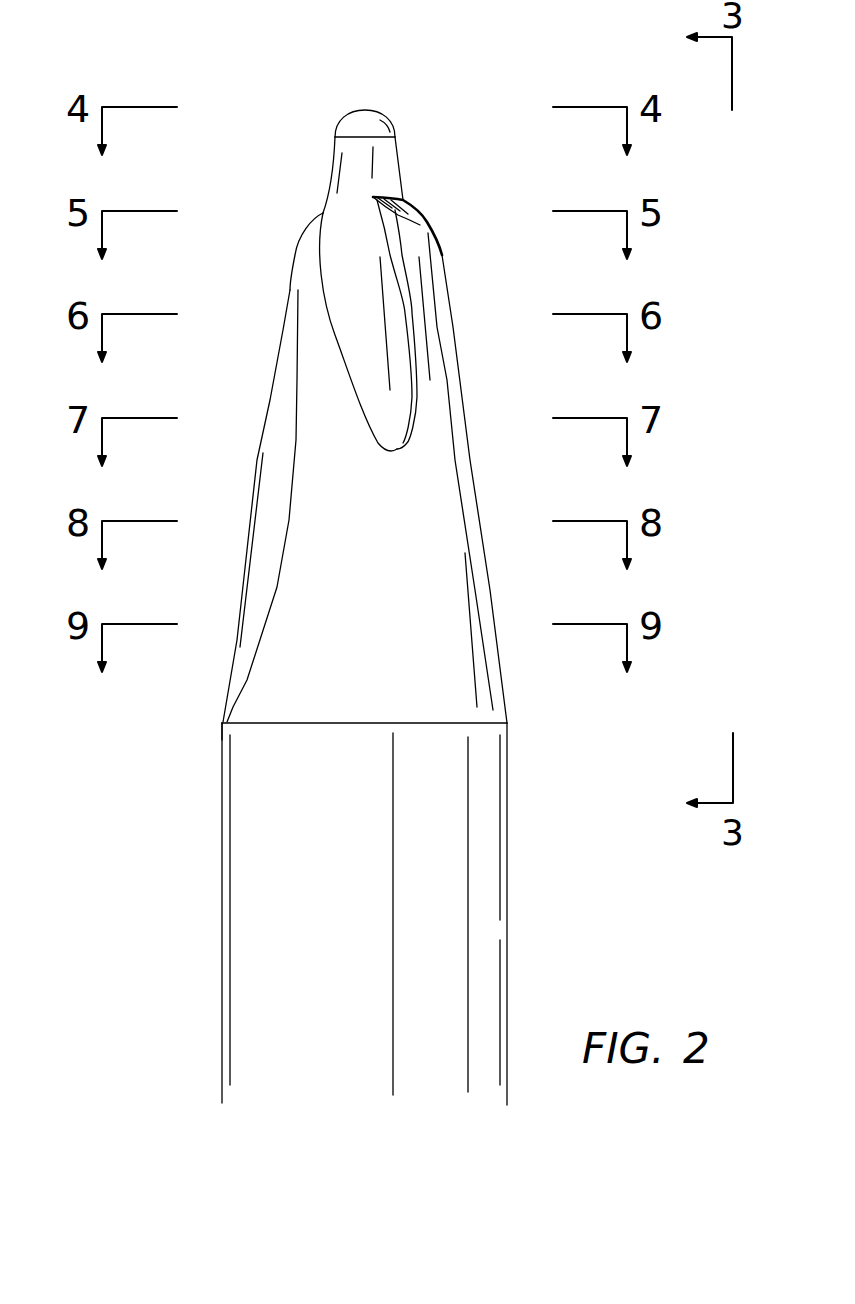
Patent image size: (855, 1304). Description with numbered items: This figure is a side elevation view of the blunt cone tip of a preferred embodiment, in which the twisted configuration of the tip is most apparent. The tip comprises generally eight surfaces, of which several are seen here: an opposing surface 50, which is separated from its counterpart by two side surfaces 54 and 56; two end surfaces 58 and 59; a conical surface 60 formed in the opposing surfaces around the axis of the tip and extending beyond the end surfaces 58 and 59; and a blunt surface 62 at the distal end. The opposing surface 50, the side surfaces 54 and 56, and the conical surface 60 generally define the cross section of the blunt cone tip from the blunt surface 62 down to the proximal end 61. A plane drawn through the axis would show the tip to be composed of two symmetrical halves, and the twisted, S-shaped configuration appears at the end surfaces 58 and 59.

The opposing surface 50 is at (433, 692).
The side surface 54 is at (267, 478).
The side surface 56 is at (440, 242).
The end surface 58 is at (325, 213).
The end surface 59 is at (397, 205).
The conical surface 60 is at (377, 153).
The proximal end 61 is at (206, 725).
The blunt surface 62 is at (365, 112).